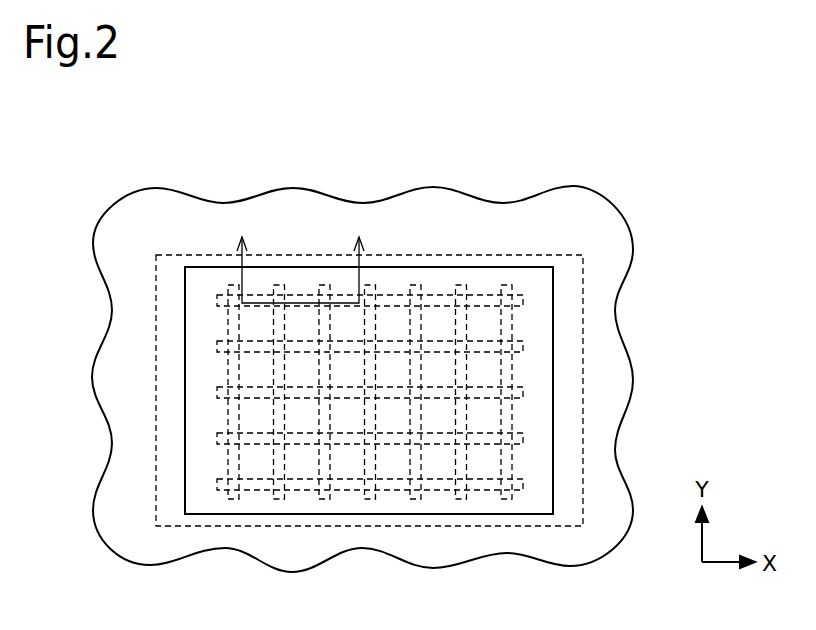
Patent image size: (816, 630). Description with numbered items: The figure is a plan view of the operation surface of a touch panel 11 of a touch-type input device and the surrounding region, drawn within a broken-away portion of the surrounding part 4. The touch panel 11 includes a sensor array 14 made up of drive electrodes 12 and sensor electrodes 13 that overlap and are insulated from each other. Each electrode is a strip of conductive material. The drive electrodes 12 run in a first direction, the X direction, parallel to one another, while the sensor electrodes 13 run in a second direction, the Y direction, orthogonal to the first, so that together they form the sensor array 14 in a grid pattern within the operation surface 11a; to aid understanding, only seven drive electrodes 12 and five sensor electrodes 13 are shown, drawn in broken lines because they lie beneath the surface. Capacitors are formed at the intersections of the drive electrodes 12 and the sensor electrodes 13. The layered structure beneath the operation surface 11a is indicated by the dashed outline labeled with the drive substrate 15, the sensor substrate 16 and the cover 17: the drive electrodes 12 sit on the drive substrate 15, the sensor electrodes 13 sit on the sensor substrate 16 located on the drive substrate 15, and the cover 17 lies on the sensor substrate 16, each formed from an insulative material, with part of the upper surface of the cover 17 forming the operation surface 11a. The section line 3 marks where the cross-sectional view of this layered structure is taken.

The cross-section line III-III 3 is at (300, 255).
The frame 4 is at (103, 268).
The touch panel 11 is at (470, 387).
The operation surface 11a is at (545, 325).
The drive electrodes 12 is at (389, 403).
The sensor electrodes 13 is at (523, 392).
The sensor array 14 is at (510, 284).
The drive substrate 15 is at (470, 390).
The sensor substrate 16 is at (470, 390).
The cover 17 is at (583, 276).